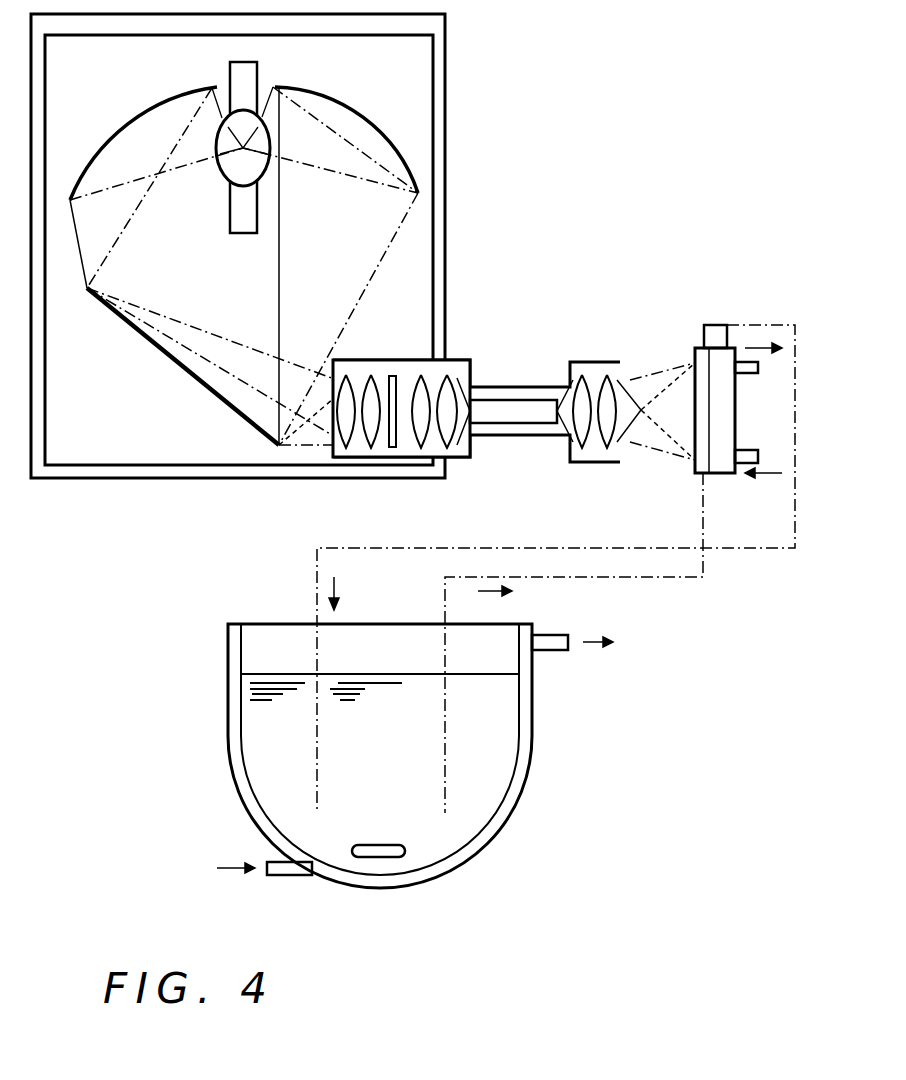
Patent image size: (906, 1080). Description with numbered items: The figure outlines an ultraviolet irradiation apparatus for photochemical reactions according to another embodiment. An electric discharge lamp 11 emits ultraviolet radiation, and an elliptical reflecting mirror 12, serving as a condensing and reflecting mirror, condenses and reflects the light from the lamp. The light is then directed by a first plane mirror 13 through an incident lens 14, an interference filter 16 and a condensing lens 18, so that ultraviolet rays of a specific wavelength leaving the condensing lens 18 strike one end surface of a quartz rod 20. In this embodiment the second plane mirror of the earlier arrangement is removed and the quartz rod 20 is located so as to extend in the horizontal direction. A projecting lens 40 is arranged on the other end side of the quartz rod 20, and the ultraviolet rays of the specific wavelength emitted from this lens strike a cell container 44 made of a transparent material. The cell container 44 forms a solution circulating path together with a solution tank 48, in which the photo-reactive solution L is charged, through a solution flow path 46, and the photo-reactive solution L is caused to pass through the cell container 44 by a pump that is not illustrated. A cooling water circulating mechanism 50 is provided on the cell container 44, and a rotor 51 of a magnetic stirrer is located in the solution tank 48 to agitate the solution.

The electric discharge lamp 11 is at (257, 75).
The elliptical reflecting mirror 12 is at (362, 118).
The first plane mirror 13 is at (180, 366).
The incident lens 14 is at (355, 450).
The interference filter 16 is at (392, 450).
The condensing lens 18 is at (428, 450).
The quartz rod 20 is at (524, 400).
The projecting lens 40 is at (597, 375).
The cell container 44 is at (695, 350).
The solution flow path 46 is at (747, 548).
The solution tank 48 is at (525, 771).
The cooling water circulating mechanism 50 is at (723, 325).
The rotor of magnetic stirrer 51 is at (393, 857).
The photo-reactive solution L is at (248, 709).